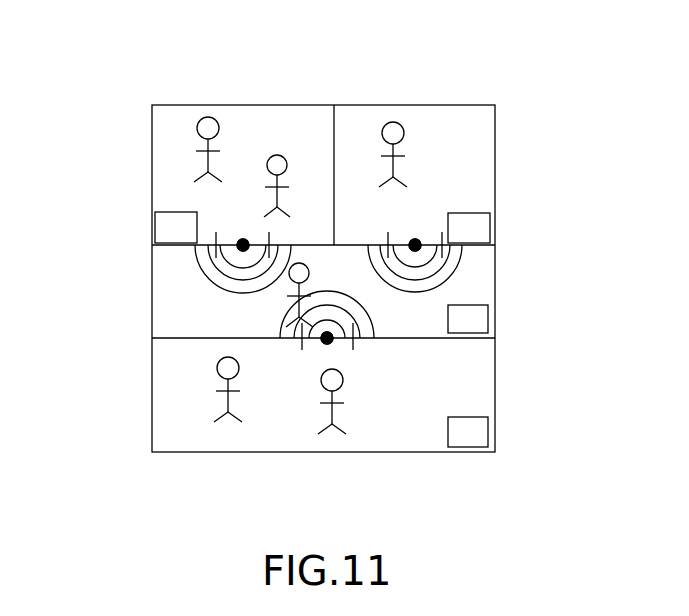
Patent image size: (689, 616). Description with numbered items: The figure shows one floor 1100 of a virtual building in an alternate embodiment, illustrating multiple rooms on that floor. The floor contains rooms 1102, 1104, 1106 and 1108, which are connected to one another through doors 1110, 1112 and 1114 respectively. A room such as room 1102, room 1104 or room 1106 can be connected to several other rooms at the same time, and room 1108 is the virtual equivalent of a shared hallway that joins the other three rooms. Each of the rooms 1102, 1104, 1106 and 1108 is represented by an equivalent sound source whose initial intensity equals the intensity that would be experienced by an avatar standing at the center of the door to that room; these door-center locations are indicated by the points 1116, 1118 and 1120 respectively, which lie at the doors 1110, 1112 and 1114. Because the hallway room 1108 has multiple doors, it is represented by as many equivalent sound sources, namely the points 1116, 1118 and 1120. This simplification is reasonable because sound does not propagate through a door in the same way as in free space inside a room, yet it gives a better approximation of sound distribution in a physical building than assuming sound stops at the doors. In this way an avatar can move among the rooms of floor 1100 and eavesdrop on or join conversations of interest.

The floor 1100 is at (378, 51).
The room 1102 is at (177, 163).
The room 1104 is at (483, 143).
The room 1106 is at (478, 385).
The room 1108 is at (478, 278).
The door 1110 is at (227, 240).
The door 1112 is at (429, 238).
The door 1114 is at (339, 346).
The point 1116 is at (240, 236).
The point 1118 is at (417, 236).
The point 1120 is at (314, 344).